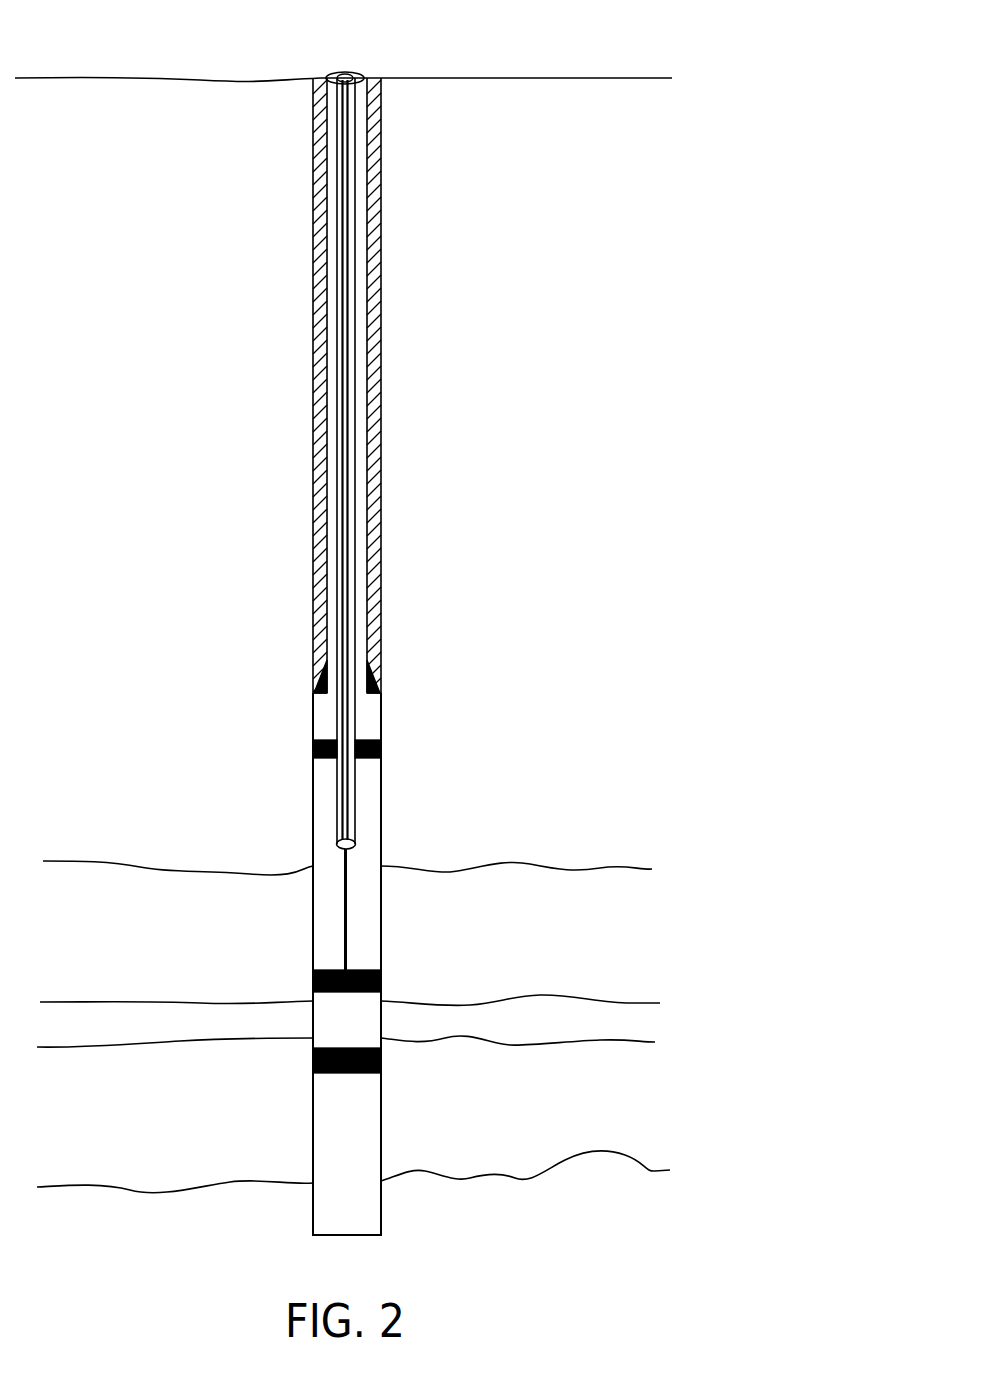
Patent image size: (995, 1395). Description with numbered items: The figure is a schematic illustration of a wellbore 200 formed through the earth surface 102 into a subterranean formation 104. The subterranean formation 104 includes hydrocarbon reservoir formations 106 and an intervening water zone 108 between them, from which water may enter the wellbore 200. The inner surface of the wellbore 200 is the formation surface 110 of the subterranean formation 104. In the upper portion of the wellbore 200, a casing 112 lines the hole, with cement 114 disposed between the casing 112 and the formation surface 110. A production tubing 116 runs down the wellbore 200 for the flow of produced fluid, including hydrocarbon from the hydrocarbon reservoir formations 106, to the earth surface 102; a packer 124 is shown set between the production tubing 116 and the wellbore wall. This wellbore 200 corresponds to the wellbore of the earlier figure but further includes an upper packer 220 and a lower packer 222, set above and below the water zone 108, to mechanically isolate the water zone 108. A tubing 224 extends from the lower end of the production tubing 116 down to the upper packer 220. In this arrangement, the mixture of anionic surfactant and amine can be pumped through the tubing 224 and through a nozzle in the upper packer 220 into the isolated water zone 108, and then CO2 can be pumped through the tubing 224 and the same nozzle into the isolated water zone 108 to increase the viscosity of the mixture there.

The earth surface 102 is at (272, 78).
The subterranean formation 104 is at (492, 461).
The hydrocarbon reservoir formations 106 is at (213, 898).
The water zone 108 is at (162, 1019).
The formation surface 110 is at (378, 708).
The casing 112 is at (318, 116).
The cement 114 is at (373, 330).
The production tubing 116 is at (338, 570).
The packer 124 is at (325, 760).
The wellbore 200 is at (198, 243).
The upper packer 220 is at (313, 978).
The lower packer 222 is at (381, 1063).
The tubing 224 is at (348, 918).